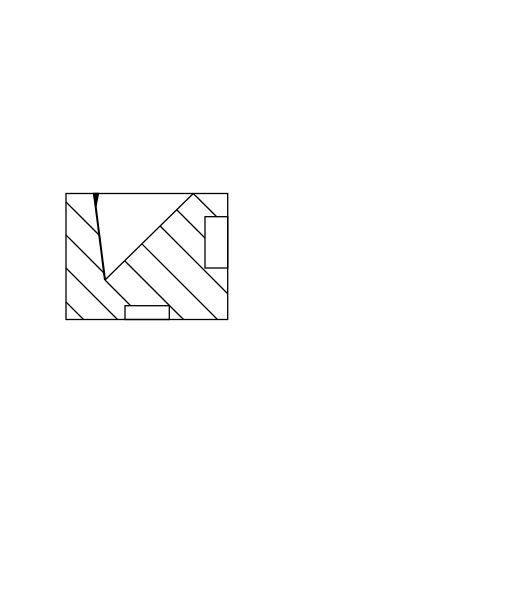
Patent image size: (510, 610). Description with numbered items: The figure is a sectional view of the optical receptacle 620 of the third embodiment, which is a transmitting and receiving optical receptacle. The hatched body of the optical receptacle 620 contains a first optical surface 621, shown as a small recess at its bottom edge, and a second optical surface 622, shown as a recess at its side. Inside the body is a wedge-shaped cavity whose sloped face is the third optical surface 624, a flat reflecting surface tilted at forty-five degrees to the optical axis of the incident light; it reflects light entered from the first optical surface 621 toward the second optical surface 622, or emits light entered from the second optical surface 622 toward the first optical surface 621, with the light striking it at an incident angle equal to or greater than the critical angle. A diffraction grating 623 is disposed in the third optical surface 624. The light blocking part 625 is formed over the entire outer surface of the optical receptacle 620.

The optical receptacle 620 is at (242, 88).
The first optical surface 621 is at (147, 306).
The second optical surface 622 is at (207, 247).
The diffraction grating 623 is at (144, 237).
The third optical surface 624 is at (128, 252).
The light blocking part 625 is at (182, 320).